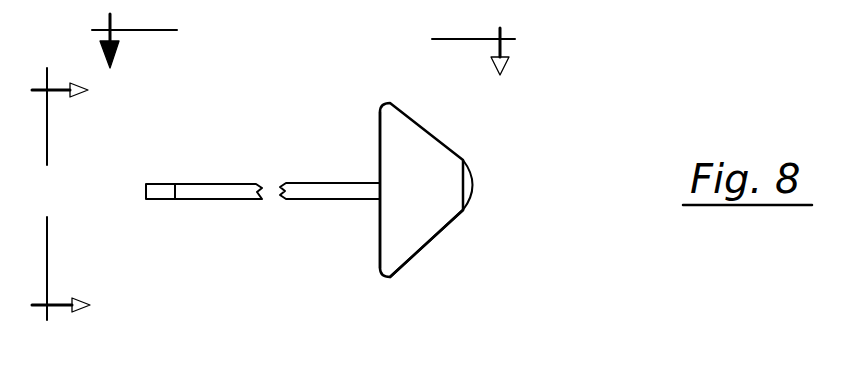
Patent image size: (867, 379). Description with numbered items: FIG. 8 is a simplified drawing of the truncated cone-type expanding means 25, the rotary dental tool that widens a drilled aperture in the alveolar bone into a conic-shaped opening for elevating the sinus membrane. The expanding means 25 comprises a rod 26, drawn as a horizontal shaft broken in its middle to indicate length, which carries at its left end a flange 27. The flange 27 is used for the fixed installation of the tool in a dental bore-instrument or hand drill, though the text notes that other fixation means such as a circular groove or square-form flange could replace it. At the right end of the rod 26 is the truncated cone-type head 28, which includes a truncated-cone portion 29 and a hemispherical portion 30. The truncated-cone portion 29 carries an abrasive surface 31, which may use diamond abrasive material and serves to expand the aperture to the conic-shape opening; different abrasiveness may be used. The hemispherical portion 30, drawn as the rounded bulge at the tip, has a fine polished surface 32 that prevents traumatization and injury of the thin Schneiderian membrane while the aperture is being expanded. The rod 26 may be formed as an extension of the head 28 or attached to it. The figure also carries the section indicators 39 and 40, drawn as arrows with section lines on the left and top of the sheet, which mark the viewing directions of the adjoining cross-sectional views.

The truncated cone-type expanding means 25 is at (268, 284).
The rod 26 is at (326, 195).
The flange 27 is at (160, 194).
The truncated cone-type head 28 is at (470, 134).
The truncated-cone portion 29 is at (395, 240).
The hemispherical portion 30 is at (470, 172).
The abrasive surface 31 is at (435, 243).
The fine (polished) surface 32 is at (475, 200).
The section line 39- 39 is at (303, 45).
The section line 40- 40 is at (72, 194).